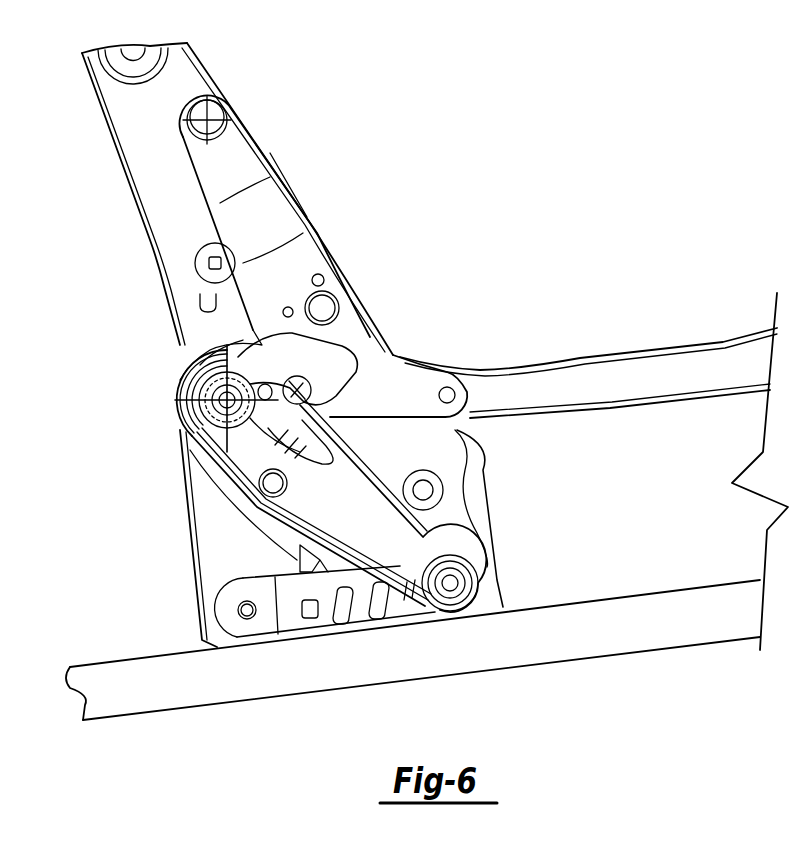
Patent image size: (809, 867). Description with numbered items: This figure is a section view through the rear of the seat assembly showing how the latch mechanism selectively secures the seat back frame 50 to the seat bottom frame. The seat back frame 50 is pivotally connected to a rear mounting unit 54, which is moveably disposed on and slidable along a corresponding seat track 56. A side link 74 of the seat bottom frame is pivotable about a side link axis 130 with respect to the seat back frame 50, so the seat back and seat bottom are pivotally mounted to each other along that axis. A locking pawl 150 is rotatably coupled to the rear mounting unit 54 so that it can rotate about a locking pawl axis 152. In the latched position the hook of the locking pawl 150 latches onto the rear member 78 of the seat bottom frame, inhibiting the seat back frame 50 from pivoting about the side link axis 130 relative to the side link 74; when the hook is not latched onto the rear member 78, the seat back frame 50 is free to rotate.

The seat back frame 50 is at (105, 122).
The rear mounting unit 54 is at (188, 547).
The seat track 56 is at (600, 598).
The side link 74 is at (612, 352).
The rear member 78 is at (297, 403).
The side link axis 130 is at (208, 120).
The locking pawl 150 is at (197, 383).
The locking pawl axis 152 is at (182, 430).